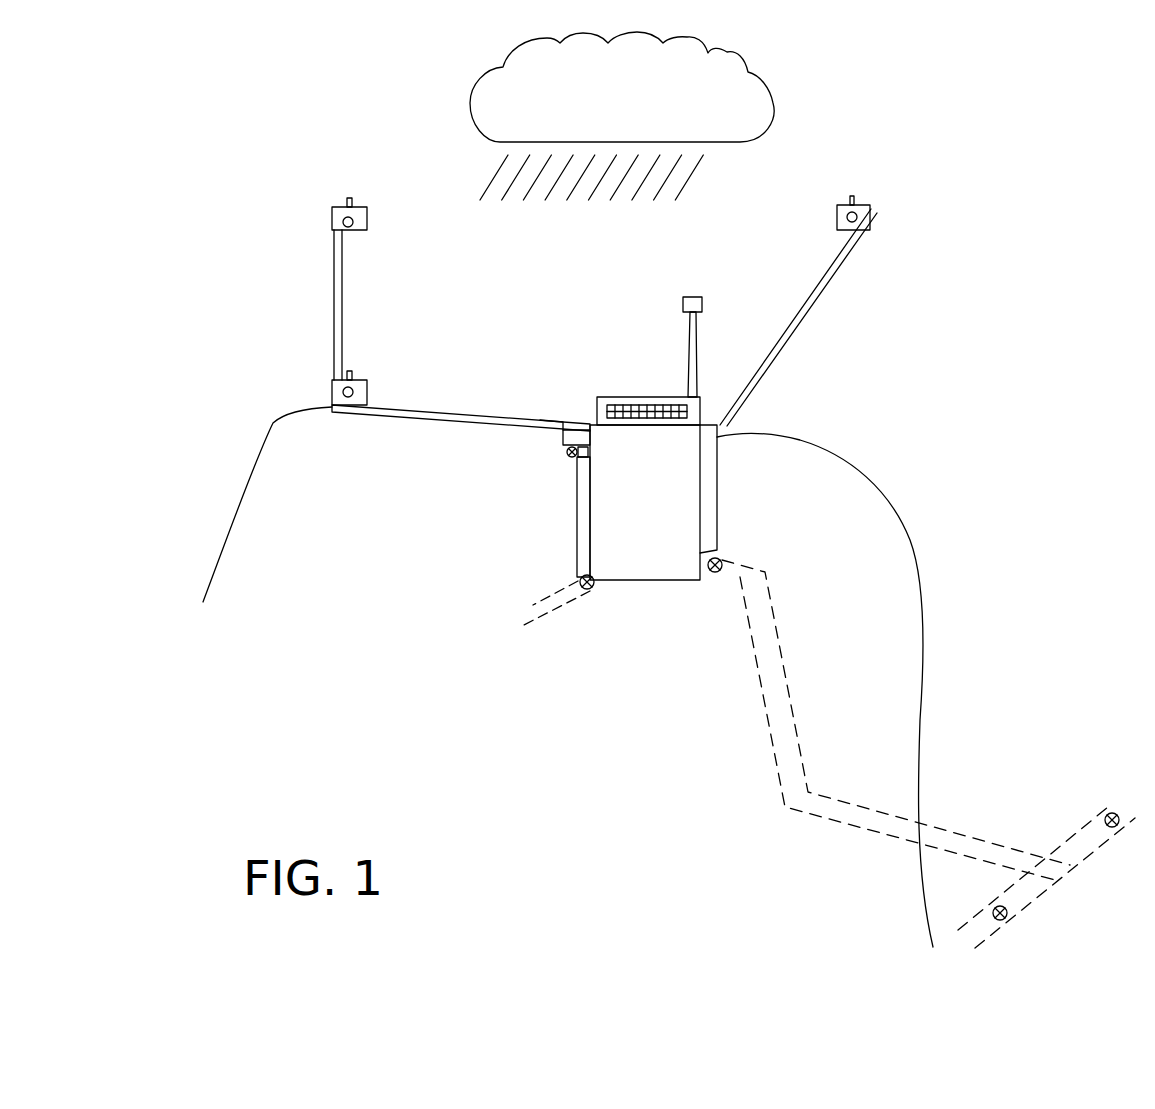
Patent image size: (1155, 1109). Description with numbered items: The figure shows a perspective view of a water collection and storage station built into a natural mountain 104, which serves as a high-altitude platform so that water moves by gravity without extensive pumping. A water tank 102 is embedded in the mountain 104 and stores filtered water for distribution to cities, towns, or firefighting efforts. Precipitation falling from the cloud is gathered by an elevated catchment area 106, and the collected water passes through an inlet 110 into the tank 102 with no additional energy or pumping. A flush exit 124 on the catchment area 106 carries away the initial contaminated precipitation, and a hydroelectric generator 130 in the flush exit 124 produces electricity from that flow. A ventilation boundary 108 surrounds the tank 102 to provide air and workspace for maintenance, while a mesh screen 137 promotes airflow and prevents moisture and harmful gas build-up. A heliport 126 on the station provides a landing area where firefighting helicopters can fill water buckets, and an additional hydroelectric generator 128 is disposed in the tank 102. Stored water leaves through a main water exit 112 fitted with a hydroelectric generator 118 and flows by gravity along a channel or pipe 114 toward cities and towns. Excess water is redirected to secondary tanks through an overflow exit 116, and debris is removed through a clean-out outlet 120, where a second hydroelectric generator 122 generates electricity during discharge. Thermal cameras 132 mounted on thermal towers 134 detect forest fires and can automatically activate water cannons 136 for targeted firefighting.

The water tank 102 is at (664, 501).
The natural mountain 104 is at (863, 483).
The catchment area 106 is at (477, 385).
The ventilation boundary 108 is at (582, 484).
The inlet 110 is at (395, 405).
The main water exit 112 is at (740, 578).
The channel and/or pipe 114 is at (1073, 845).
The overflow exit 116 is at (563, 452).
The hydroelectric generator 118 is at (713, 558).
The clean-out outlet 120 is at (560, 603).
The second hydroelectric generator 122 is at (588, 592).
The flush exit 124 is at (578, 430).
The heliport 126 is at (632, 408).
The additional hydroelectric generator 128 is at (563, 430).
The hydroelectric generator 130 is at (575, 455).
The thermal camera 132 is at (702, 307).
The thermal tower 134 is at (693, 355).
The water cannon 136 is at (878, 212).
The screen 137 is at (663, 408).